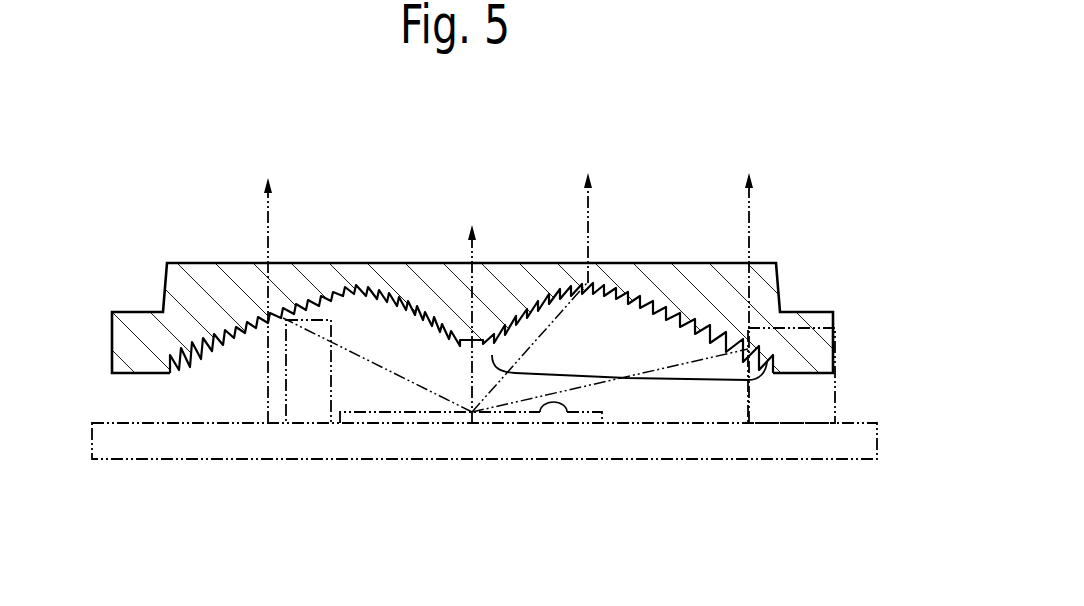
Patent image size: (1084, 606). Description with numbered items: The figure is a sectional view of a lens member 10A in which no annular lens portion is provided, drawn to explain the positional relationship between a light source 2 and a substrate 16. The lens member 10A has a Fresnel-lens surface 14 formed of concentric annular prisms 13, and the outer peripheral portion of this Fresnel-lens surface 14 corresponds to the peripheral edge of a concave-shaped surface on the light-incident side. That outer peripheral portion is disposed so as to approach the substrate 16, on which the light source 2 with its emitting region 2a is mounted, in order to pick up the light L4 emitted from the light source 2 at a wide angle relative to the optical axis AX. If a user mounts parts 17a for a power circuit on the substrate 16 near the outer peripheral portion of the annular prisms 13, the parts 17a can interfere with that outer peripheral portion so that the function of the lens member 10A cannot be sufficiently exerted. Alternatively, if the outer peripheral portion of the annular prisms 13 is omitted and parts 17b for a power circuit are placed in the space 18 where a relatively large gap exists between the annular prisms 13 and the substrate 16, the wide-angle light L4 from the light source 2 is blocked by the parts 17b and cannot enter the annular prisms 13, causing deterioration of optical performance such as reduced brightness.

The lens member 10A is at (479, 234).
The annular prisms 13 is at (274, 328).
The space 18 is at (471, 296).
The Fresnel-lens surface 14 is at (627, 378).
The substrate 16 is at (417, 448).
The parts for a power circuit 17a is at (748, 405).
The parts for a power circuit 17b is at (286, 407).
The light source 2 is at (476, 461).
The light emitting surface 2a is at (567, 413).
The optical axis AX is at (472, 250).
The light L4 is at (268, 237).